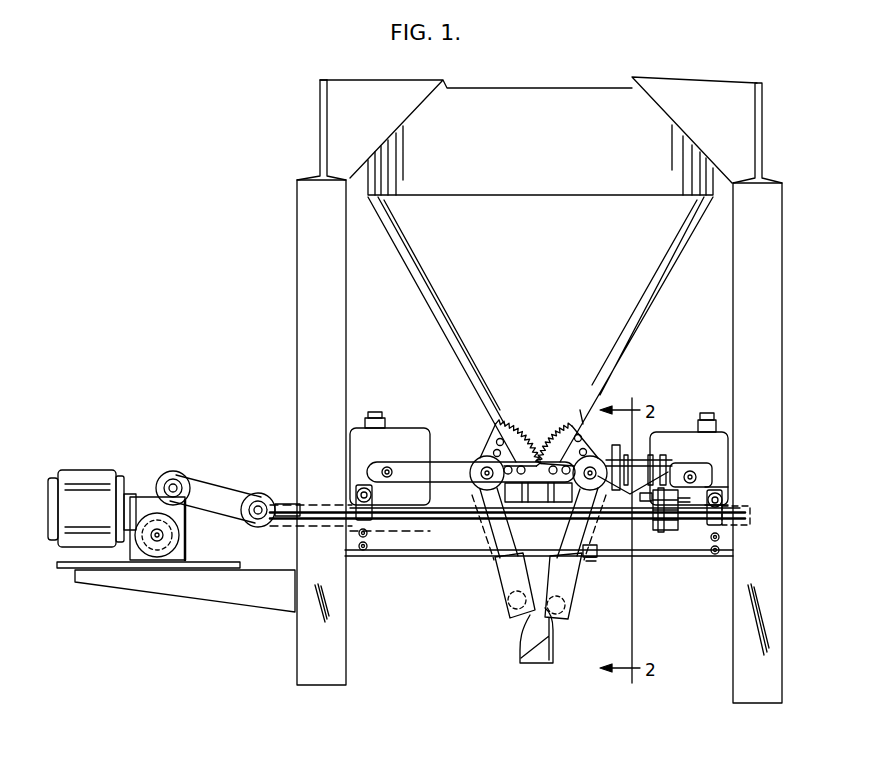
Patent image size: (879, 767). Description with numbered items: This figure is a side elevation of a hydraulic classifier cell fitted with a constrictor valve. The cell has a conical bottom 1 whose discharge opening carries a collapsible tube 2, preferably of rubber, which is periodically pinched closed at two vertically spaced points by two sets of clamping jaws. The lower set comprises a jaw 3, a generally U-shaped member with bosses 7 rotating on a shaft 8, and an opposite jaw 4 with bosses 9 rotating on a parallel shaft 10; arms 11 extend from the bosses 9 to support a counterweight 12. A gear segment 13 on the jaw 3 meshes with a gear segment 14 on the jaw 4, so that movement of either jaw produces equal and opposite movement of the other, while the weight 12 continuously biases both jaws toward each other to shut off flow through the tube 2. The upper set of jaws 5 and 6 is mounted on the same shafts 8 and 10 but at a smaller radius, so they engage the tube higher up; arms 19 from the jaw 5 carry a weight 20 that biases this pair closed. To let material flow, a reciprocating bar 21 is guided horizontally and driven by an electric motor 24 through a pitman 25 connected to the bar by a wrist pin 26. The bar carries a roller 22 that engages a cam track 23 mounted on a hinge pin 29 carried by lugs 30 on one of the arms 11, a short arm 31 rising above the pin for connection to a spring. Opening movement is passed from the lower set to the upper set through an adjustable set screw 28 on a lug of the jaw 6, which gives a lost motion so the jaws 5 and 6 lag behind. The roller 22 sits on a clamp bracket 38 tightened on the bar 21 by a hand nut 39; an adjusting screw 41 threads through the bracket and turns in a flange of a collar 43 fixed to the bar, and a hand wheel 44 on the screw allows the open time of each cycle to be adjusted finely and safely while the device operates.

The conical bottom 1 is at (628, 337).
The collapsible tube 2 is at (527, 650).
The jaw 3 is at (510, 605).
The jaw 4 is at (570, 604).
The jaw 5 is at (500, 566).
The jaw 6 is at (566, 570).
The bosses 7 is at (481, 460).
The shaft 8 is at (481, 478).
The bosses 9 is at (594, 420).
The shaft 10 is at (586, 410).
The arms 11 is at (722, 480).
The counterweight 12 is at (728, 502).
The gear segment 13 is at (492, 428).
The gear segment 14 is at (574, 424).
The arms 19 is at (367, 470).
The weight 20 is at (403, 430).
The reciprocating bar 21 is at (440, 524).
The roller 22 is at (700, 474).
The cam track 23 is at (718, 438).
The electric motor 24 is at (112, 474).
The pitman 25 is at (228, 488).
The wrist pin 26 is at (255, 524).
The set screw 28 is at (597, 560).
The hinge pin 29 is at (695, 420).
The lugs 30 is at (650, 458).
The short arm 31 is at (618, 445).
The clamp bracket 38 is at (665, 531).
The hand nut 39 is at (685, 535).
The adjusting screw 41 is at (652, 540).
The collar 43 is at (592, 551).
The hand wheel 44 is at (542, 445).